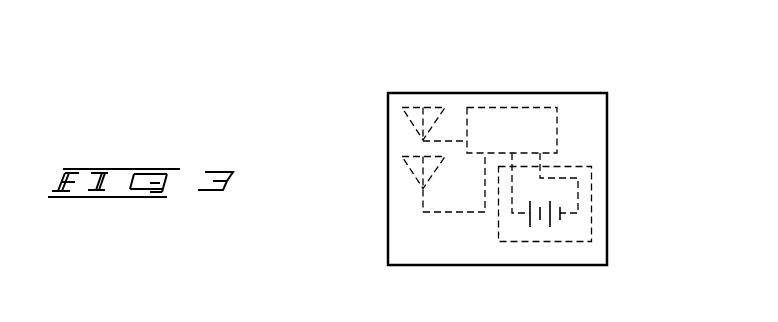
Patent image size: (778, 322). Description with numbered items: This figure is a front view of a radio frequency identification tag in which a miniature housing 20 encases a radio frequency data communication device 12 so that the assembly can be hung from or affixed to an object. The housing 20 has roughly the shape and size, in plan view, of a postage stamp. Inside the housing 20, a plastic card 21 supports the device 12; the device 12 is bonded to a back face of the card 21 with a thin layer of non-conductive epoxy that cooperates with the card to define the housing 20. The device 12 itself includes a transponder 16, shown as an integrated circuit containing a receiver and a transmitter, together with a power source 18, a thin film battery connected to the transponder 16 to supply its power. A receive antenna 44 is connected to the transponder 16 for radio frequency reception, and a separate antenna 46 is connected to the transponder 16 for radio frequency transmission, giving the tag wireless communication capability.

The radio frequency data communication device 12 is at (577, 132).
The transponder 16 is at (530, 103).
The power source 18 is at (592, 198).
The housing 20 is at (388, 228).
The card 21 is at (412, 255).
The receive antenna 44 is at (427, 102).
The antenna 46 is at (413, 170).